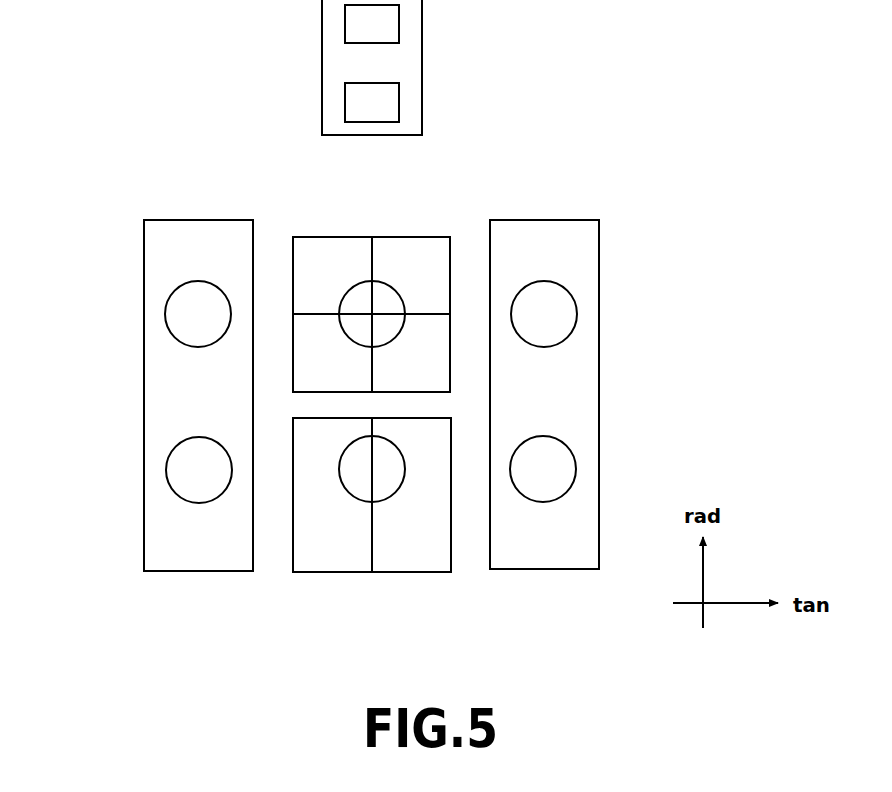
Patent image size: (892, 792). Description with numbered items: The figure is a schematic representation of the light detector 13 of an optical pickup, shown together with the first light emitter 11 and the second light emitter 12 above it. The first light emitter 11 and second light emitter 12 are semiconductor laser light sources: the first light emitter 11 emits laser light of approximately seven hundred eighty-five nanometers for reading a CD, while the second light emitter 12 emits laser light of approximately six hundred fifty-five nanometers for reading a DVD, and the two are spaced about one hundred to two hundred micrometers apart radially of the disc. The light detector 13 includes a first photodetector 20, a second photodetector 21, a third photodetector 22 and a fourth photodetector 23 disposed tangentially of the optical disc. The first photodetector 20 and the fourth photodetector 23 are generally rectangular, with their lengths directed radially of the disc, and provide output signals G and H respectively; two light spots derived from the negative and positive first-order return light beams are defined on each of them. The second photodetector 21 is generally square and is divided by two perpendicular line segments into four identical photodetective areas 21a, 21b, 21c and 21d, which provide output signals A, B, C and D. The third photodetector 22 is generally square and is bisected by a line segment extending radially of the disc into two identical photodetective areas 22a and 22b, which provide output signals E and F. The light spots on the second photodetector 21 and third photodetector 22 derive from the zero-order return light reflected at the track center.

The first light emitter 11 is at (357, 24).
The second light emitter 12 is at (355, 103).
The light detector 13 is at (480, 170).
The first photodetector 20 is at (163, 228).
The second photodetector 21 is at (288, 183).
The first photodetective area 21a is at (338, 242).
The second photodetective area 21b is at (447, 219).
The third photodetective area 21c is at (325, 383).
The fourth photodetective area 21d is at (412, 382).
The third photodetector 22 is at (316, 605).
The photodetective area 22a is at (343, 563).
The photodetective area 22b is at (425, 563).
The fourth photodetector 23 is at (582, 222).